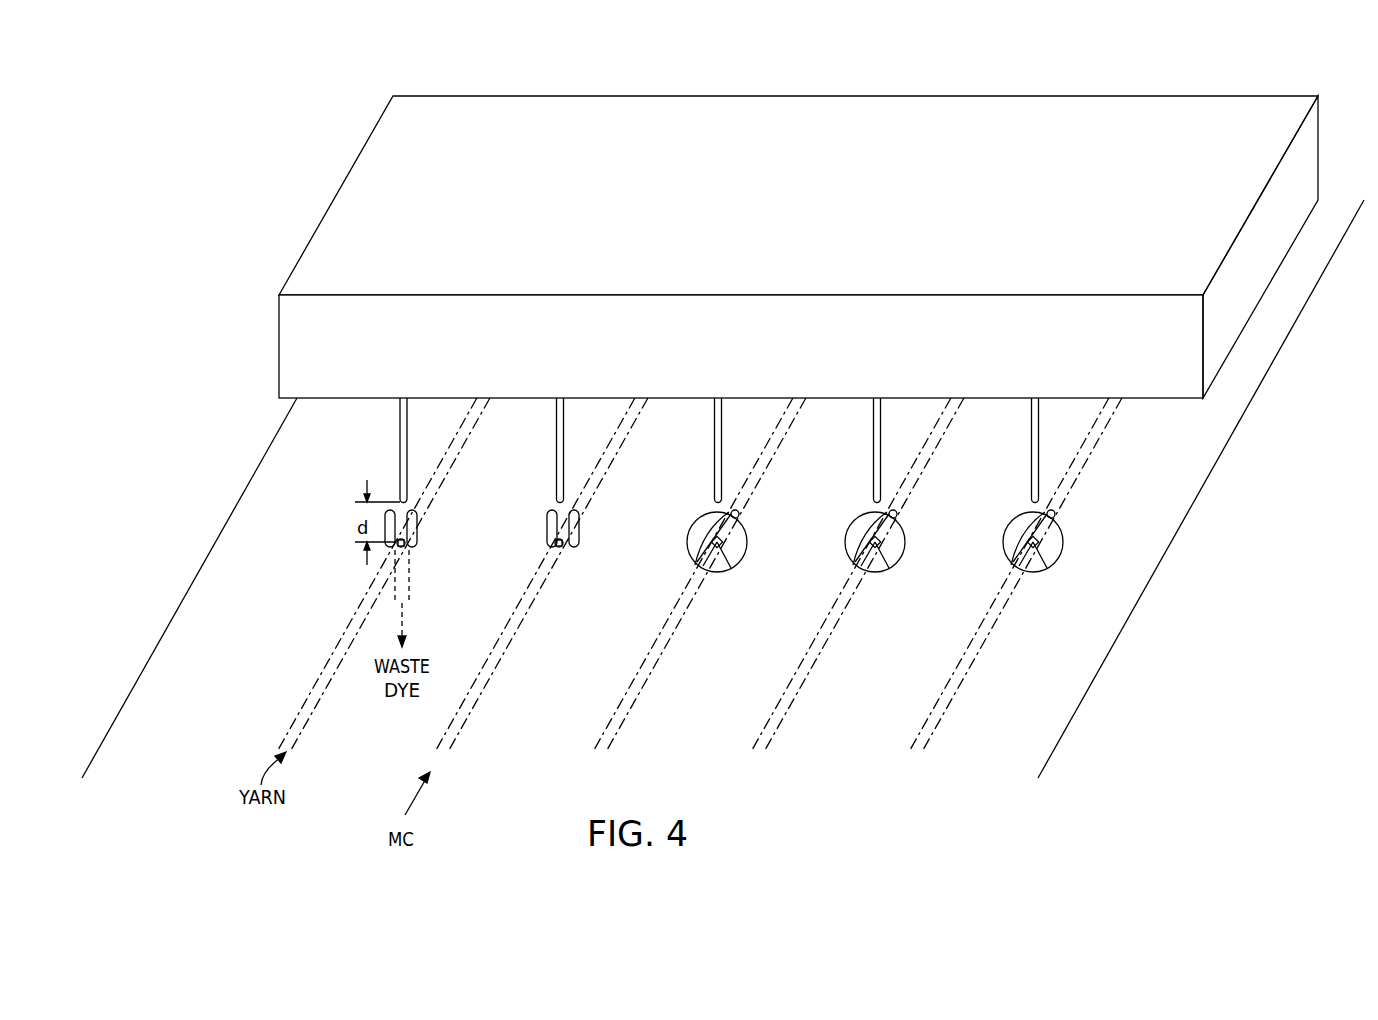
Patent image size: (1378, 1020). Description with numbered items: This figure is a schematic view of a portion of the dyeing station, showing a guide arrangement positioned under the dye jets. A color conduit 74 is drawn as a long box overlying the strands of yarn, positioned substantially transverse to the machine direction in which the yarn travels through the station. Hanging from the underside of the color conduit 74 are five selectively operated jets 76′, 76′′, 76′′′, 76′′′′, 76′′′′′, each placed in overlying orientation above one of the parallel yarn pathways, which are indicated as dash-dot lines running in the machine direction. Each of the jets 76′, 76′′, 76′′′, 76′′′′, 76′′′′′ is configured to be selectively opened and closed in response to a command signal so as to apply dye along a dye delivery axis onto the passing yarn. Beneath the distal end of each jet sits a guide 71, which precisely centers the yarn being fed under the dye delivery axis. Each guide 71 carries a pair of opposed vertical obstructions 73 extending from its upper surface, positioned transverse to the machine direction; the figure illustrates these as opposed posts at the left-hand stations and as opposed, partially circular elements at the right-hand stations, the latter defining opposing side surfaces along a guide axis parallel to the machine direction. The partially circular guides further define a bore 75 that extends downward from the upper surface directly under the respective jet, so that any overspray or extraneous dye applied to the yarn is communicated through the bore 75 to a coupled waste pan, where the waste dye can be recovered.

The guide 71 is at (405, 549).
The vertical obstructions 73 is at (416, 532).
The color conduit 74 is at (792, 195).
The bore 75 is at (738, 516).
The jet 76′ is at (400, 410).
The jet 76′′ is at (557, 410).
The jet 76′′′ is at (715, 410).
The jet 76′′′′ is at (874, 410).
The jet 76′′′′′ is at (1032, 410).